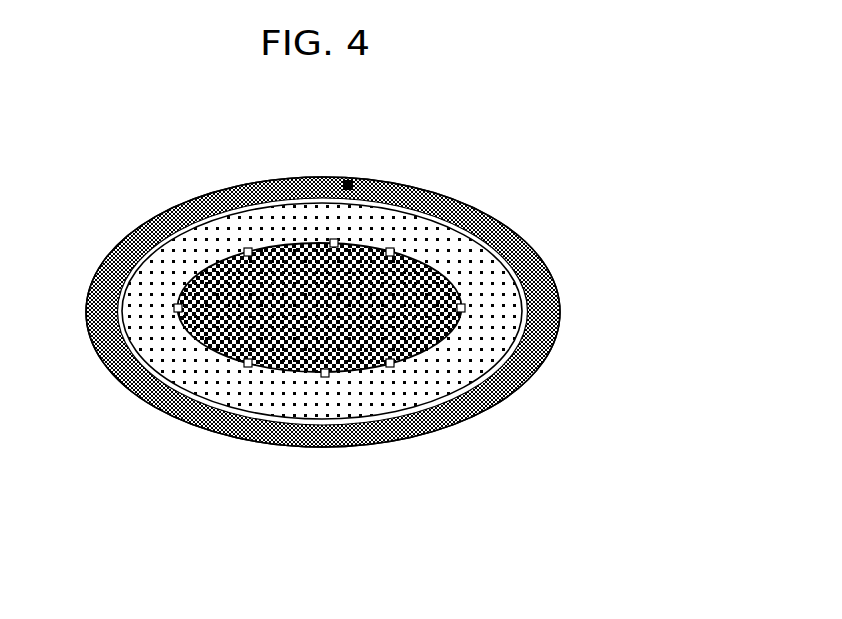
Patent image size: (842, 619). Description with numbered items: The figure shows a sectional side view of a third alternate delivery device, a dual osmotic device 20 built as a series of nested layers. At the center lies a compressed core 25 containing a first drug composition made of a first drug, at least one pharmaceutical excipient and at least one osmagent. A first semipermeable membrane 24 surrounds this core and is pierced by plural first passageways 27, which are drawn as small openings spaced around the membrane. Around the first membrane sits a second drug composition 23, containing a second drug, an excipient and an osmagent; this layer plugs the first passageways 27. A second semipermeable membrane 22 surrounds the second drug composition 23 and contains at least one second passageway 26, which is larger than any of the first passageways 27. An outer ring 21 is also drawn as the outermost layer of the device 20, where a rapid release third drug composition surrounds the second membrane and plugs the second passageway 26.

The dual osmotic device 20 is at (377, 329).
The outer ring 21 is at (542, 280).
The second semipermeable membrane 22 is at (522, 360).
The second drug composition 23 is at (428, 387).
The first semipermeable membrane 24 is at (192, 343).
The compressed core 25 is at (288, 347).
The second passageway 26 is at (348, 186).
The first passageways 27 is at (325, 377).